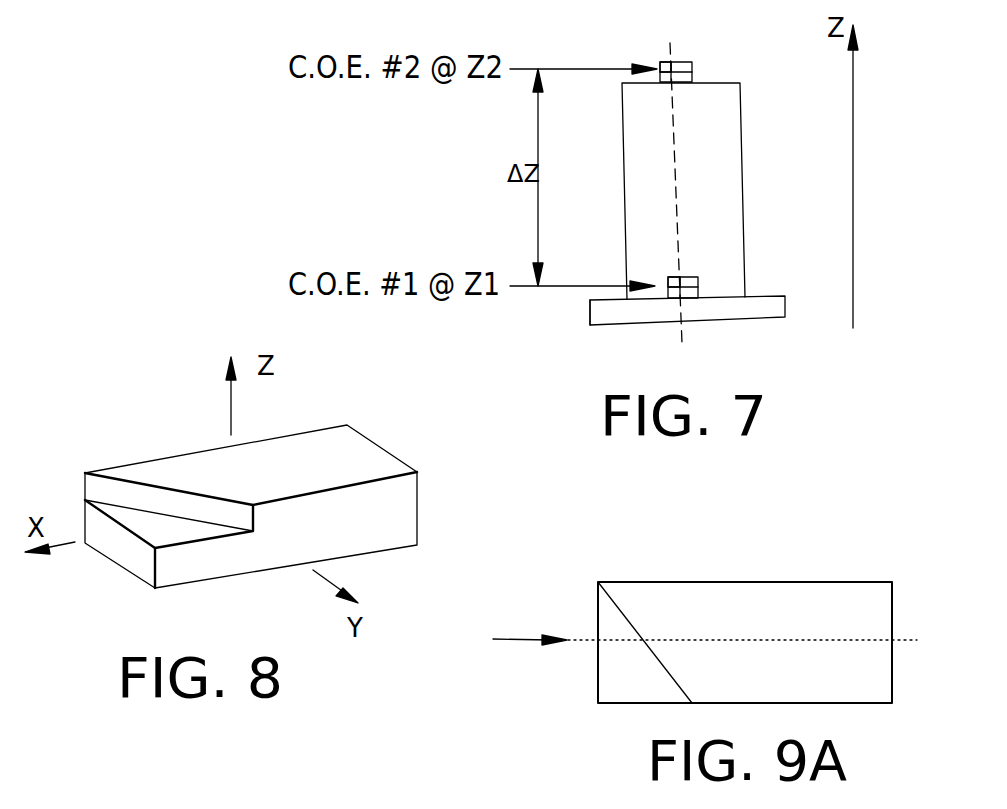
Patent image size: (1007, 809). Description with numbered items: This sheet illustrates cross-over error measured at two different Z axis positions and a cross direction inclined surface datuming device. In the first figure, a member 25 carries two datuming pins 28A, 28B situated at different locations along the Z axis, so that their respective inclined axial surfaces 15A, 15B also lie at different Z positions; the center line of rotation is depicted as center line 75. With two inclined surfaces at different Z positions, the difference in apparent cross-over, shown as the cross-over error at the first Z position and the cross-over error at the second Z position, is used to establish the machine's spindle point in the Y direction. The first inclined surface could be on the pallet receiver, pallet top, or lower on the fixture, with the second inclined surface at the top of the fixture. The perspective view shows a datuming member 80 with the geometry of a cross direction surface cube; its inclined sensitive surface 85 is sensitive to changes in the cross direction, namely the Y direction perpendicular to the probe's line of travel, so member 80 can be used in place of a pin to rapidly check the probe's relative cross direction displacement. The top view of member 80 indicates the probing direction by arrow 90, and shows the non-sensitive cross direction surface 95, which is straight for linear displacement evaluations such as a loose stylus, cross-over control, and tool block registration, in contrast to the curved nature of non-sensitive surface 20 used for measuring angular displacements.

In FIG. 7, the center line 75 is at (673, 117).
In FIG. 7, the inclined axial surface 15B is at (683, 62).
In FIG. 7, the datuming pin 28B is at (665, 62).
In FIG. 7, the inclined axial surface 15A is at (698, 282).
In FIG. 7, the datuming pin 28A is at (687, 278).
In FIG. 7, the non-sensitive surface 20 is at (770, 317).
In FIG. 7, the member 25 is at (590, 308).
In FIG. 8, the datuming member 80 is at (342, 540).
In FIG. 9A, the datuming member 80 is at (867, 624).
In FIG. 8, the sensitive surface 85 is at (92, 488).
In FIG. 9A, the sensitive surface 85 is at (622, 611).
In FIG. 8, the cross direction surface 95 is at (130, 555).
In FIG. 9A, the cross direction surface 95 is at (598, 605).
In FIG. 9A, the arrow 90 is at (513, 640).